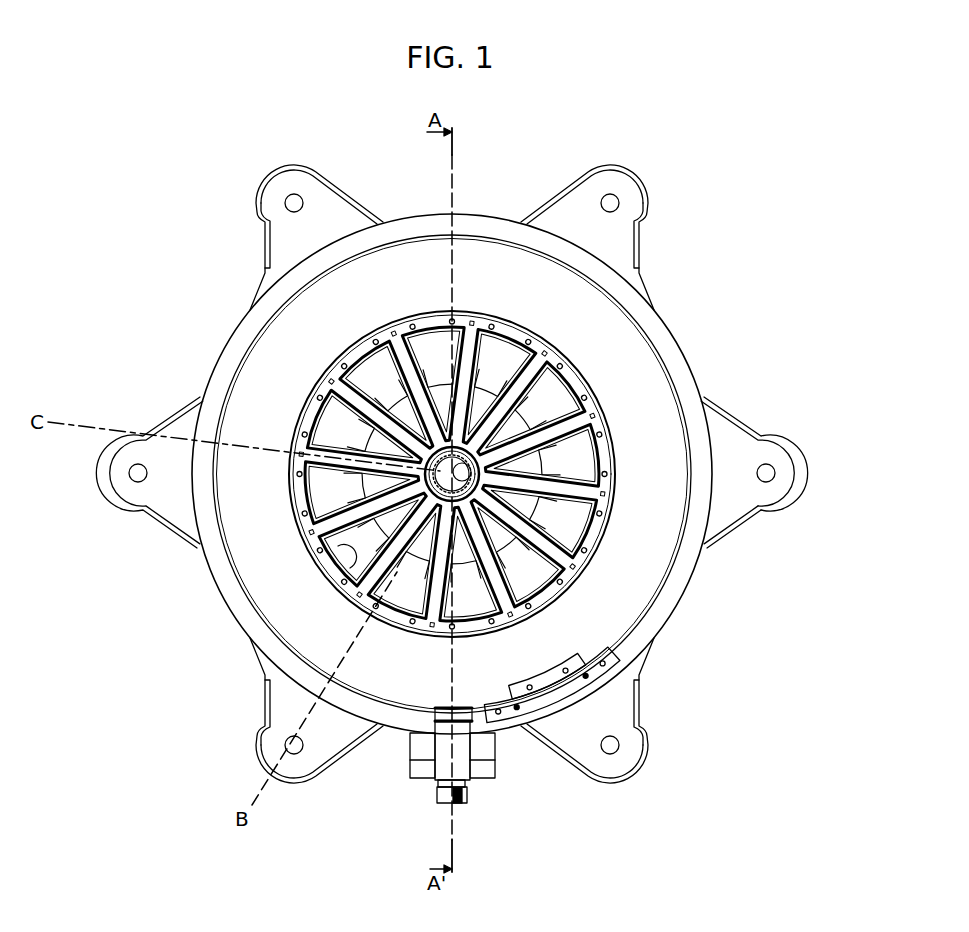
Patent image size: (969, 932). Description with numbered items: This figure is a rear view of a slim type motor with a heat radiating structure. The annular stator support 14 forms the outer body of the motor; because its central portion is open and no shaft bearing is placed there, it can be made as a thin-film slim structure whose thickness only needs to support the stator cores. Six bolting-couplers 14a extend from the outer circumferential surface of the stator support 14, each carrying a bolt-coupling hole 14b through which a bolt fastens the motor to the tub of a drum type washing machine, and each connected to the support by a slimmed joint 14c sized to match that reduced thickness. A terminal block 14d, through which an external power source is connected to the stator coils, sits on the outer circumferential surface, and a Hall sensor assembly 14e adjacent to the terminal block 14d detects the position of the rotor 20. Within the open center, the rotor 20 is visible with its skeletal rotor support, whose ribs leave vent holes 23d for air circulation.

The stator support 14 is at (485, 487).
The bolting-coupler 14a is at (788, 492).
The bolt-coupling hole 14b is at (775, 468).
The joint 14c is at (713, 534).
The terminal block 14d is at (468, 795).
The Hall sensor assembly 14e is at (520, 727).
The rotor 20 is at (438, 498).
The vent hole 23d is at (347, 583).